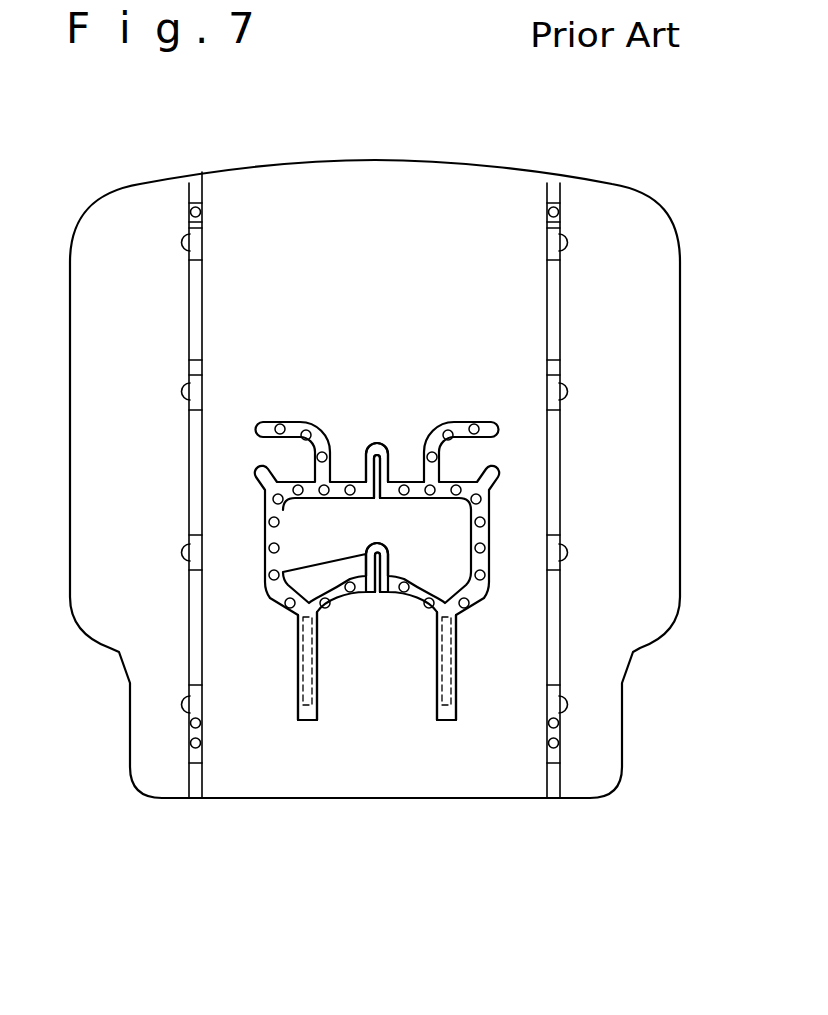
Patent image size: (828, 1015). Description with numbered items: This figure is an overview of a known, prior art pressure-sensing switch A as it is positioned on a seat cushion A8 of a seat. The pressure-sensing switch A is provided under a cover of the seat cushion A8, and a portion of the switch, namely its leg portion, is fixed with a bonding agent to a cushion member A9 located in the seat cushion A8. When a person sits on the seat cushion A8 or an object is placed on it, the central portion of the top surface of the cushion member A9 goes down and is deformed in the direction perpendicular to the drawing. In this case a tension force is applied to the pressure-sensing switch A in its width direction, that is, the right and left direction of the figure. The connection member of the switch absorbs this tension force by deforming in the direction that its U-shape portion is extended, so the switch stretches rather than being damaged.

The pressure-sensing switch A is at (348, 446).
The seat cushion A8 is at (542, 157).
The cushion member A9 is at (603, 208).